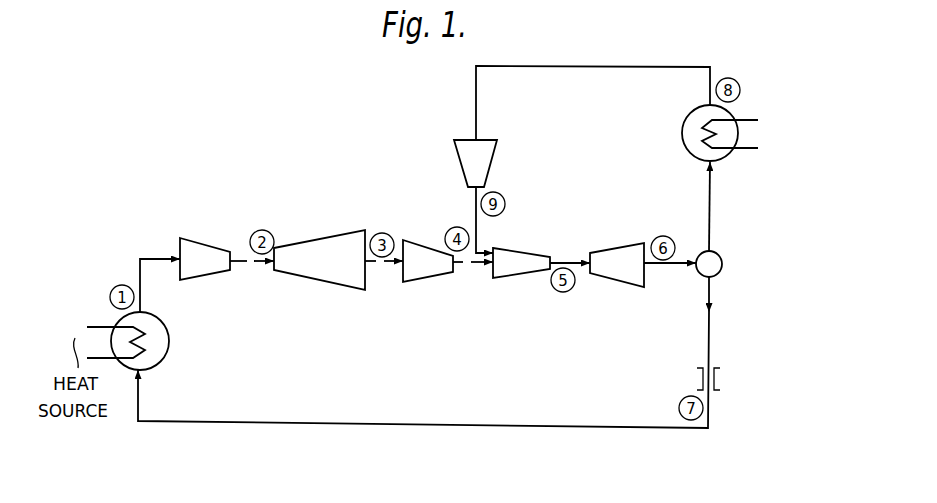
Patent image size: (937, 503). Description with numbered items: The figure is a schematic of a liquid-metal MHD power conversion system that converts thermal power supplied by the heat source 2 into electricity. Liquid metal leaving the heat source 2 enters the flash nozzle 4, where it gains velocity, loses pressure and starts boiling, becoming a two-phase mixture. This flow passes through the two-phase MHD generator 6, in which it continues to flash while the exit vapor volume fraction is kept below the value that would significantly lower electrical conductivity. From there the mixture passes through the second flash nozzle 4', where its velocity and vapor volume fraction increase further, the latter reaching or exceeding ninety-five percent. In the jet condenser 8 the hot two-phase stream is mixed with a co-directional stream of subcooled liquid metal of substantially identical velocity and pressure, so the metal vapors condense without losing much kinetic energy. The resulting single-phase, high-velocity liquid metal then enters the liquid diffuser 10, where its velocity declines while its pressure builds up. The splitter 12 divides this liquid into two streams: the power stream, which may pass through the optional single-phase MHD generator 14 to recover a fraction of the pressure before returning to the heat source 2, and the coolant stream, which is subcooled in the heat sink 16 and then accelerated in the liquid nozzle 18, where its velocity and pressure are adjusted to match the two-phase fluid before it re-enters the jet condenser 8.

The heat source 2 is at (163, 339).
The flash nozzle 4 is at (202, 259).
The two-phase MHD generator 6 is at (318, 263).
The second flash nozzle 4' is at (425, 259).
The jet condenser 8 is at (525, 265).
The liquid diffuser 10 is at (623, 250).
The splitter 12 is at (719, 253).
The single-phase MHD generator 14 is at (720, 380).
The heat sink 16 is at (693, 140).
The liquid nozzle 18 is at (486, 161).